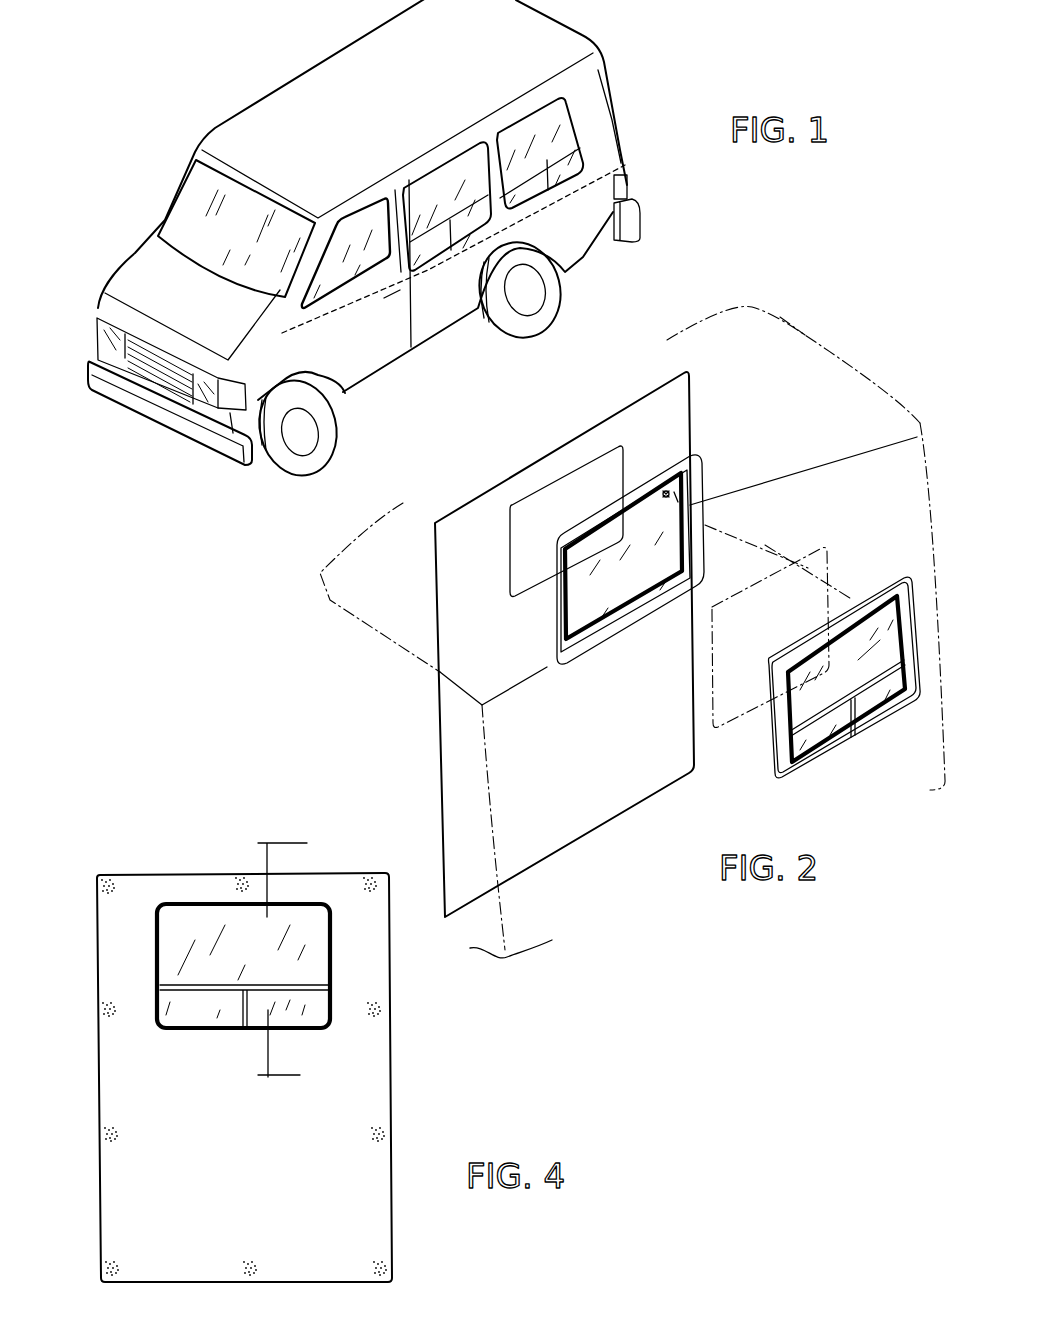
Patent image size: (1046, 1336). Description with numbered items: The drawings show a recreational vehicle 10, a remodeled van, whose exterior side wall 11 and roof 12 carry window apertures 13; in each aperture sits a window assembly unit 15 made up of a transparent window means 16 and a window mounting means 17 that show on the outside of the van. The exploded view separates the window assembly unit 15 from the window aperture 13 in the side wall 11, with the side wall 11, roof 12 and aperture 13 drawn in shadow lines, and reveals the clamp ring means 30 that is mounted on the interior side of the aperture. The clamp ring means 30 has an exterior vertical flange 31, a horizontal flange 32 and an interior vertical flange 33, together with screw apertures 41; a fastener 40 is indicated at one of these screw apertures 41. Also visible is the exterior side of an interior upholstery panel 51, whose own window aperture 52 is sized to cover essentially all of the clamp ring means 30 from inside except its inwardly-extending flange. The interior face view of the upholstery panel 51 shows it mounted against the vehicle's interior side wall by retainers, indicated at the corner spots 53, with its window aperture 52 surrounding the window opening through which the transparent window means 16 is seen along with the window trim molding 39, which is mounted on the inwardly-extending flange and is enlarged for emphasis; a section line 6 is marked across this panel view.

In FIG. 4, the section line 6- 6 is at (269, 962).
In FIG. 1, the recreational vehicle 10 is at (386, 242).
In FIG. 1, the exterior side wall 11 is at (602, 108).
In FIG. 2, the exterior side wall 11 is at (894, 532).
In FIG. 1, the roof 12 is at (501, 66).
In FIG. 2, the roof 12 is at (856, 433).
In FIG. 1, the window aperture 13 is at (458, 163).
In FIG. 2, the window aperture 13 is at (740, 722).
In FIG. 1, the window assembly unit 15 is at (557, 187).
In FIG. 2, the window assembly unit 15 is at (845, 702).
In FIG. 1, the transparent window means 16 is at (541, 152).
In FIG. 2, the transparent window means 16 is at (864, 665).
In FIG. 4, the transparent window means 16 is at (257, 966).
In FIG. 2, the window mounting means 17 is at (780, 772).
In FIG. 2, the clamp ring means 30 is at (663, 543).
In FIG. 2, the exterior vertical flange 31 is at (562, 658).
In FIG. 2, the horizontal flange 32 is at (605, 632).
In FIG. 2, the interior vertical flange 33 is at (688, 485).
In FIG. 2, the window trim molding 39 is at (575, 592).
In FIG. 4, the window trim molding 39 is at (212, 1032).
In FIG. 2, the fastener screw 40 is at (667, 497).
In FIG. 2, the screw apertures 41 is at (684, 503).
In FIG. 2, the interior upholstery panel 51 is at (477, 563).
In FIG. 4, the interior upholstery panel 51 is at (253, 1174).
In FIG. 2, the window aperture 52 is at (523, 600).
In FIG. 4, the window aperture 52 is at (335, 962).
In FIG. 4, the adhesive spots 53 is at (110, 890).